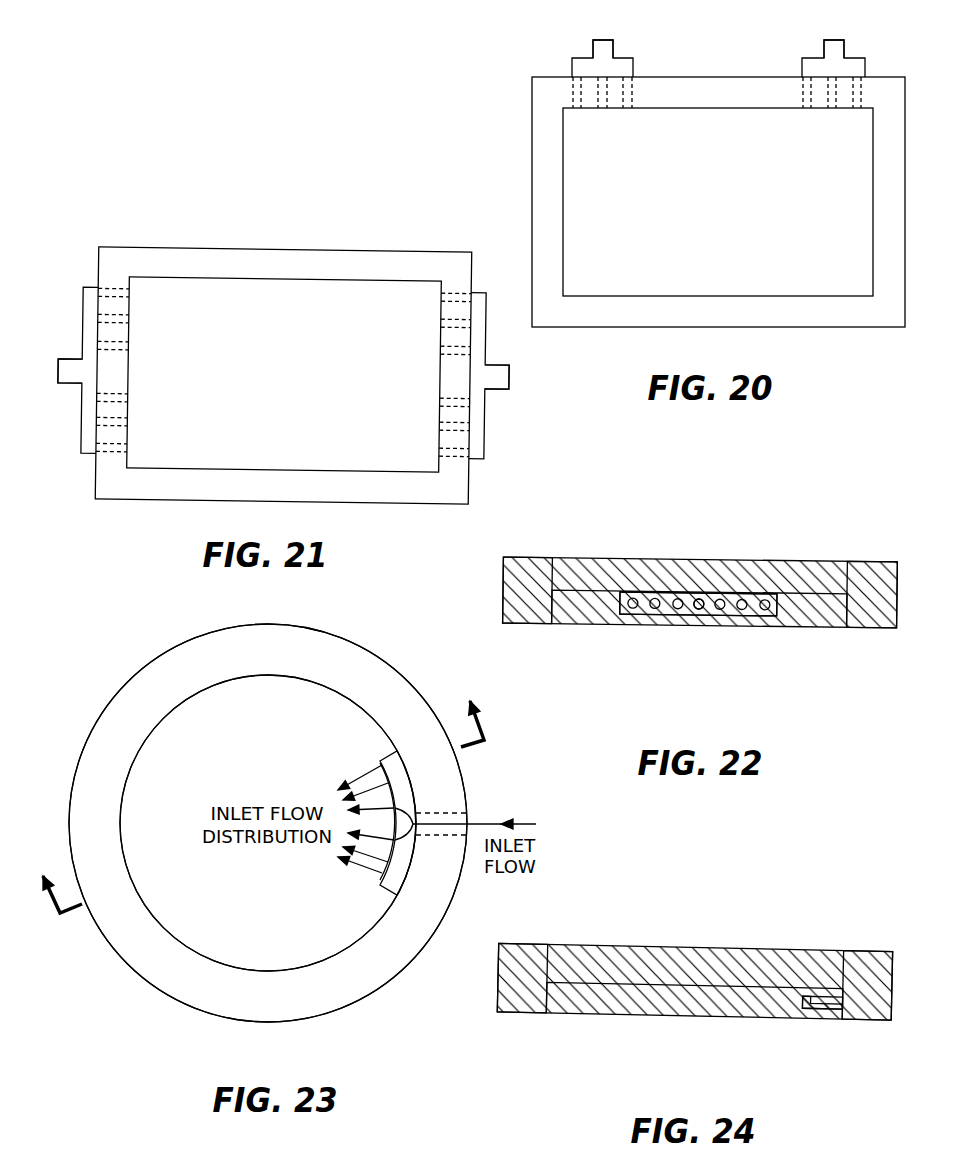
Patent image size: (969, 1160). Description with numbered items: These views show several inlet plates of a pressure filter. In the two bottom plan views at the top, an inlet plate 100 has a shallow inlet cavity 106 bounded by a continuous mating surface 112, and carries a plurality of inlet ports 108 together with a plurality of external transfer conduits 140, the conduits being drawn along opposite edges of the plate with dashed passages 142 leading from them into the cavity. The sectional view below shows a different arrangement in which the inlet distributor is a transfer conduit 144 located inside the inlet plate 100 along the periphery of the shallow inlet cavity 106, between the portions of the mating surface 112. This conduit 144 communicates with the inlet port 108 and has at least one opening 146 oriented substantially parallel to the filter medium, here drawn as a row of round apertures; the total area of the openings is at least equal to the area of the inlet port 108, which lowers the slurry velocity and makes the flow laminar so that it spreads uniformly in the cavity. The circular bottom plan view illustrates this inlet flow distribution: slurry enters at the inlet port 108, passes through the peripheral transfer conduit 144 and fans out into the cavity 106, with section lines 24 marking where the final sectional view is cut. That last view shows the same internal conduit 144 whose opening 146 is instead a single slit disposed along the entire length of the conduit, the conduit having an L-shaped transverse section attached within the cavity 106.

In FIG. 23, the section lines 24— 24 is at (255, 794).
In FIG. 20, the inlet plate 100 is at (532, 133).
In FIG. 21, the inlet plate 100 is at (352, 248).
In FIG. 22, the inlet plate 100 is at (748, 562).
In FIG. 23, the inlet plate 100 is at (362, 1000).
In FIG. 24, the inlet plate 100 is at (720, 950).
In FIG. 20, the shallow inlet cavity 106 is at (612, 275).
In FIG. 21, the shallow inlet cavity 106 is at (202, 454).
In FIG. 22, the shallow inlet cavity 106 is at (592, 592).
In FIG. 23, the shallow inlet cavity 106 is at (204, 904).
In FIG. 24, the shallow inlet cavity 106 is at (590, 985).
In FIG. 20, the inlet port 108 is at (613, 47).
In FIG. 21, the inlet port 108 is at (70, 370).
In FIG. 22, the inlet port 108 is at (697, 609).
In FIG. 23, the inlet port 108 is at (436, 812).
In FIG. 20, the continuous mating surface 112 is at (547, 193).
In FIG. 21, the continuous mating surface 112 is at (272, 262).
In FIG. 22, the continuous mating surface 112 is at (530, 625).
In FIG. 23, the continuous mating surface 112 is at (163, 970).
In FIG. 24, the continuous mating surface 112 is at (523, 1013).
In FIG. 20, the external transfer conduit 140 is at (575, 68).
In FIG. 21, the external transfer conduit 140 is at (88, 320).
In FIG. 20, the inlet passages 142 is at (603, 109).
In FIG. 21, the inlet passages 142 is at (128, 318).
In FIG. 22, the transfer conduit 144 is at (643, 615).
In FIG. 23, the transfer conduit 144 is at (385, 750).
In FIG. 24, the transfer conduit 144 is at (815, 1008).
In FIG. 22, the opening 146 is at (740, 615).
In FIG. 23, the opening 146 is at (398, 823).
In FIG. 24, the opening 146 is at (802, 990).